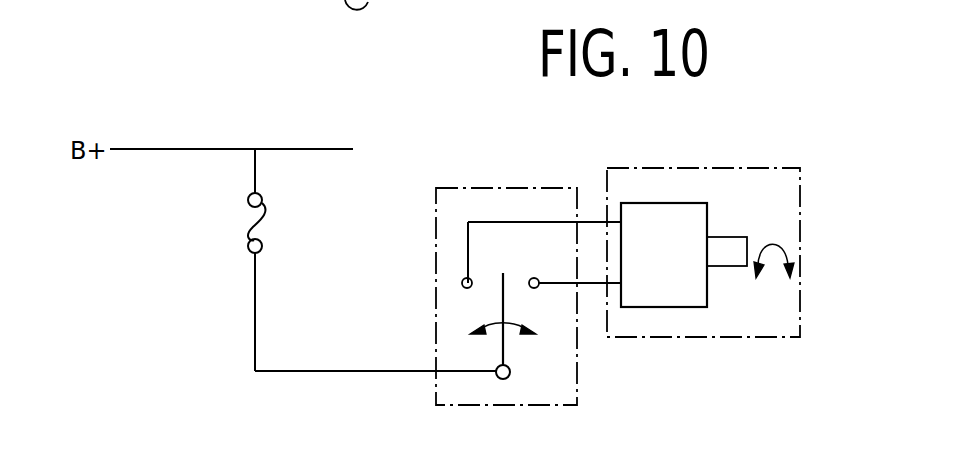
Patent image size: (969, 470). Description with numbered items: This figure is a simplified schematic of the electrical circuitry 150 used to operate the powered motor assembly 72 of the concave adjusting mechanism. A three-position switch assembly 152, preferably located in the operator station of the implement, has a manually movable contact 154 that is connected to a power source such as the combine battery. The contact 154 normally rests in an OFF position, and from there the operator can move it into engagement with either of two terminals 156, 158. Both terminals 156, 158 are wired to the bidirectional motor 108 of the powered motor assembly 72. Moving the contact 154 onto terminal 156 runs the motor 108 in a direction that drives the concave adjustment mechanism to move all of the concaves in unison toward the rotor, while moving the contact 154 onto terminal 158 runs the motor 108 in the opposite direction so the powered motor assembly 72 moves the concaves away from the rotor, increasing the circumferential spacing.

The powered motor assembly 72 is at (676, 166).
The bidirectional motor 108 is at (707, 255).
The electrical circuitry 150 is at (372, 372).
The three-position switch assembly 152 is at (510, 188).
The manually movable contact 154 is at (500, 294).
The terminal 156 is at (462, 283).
The terminal 158 is at (537, 288).